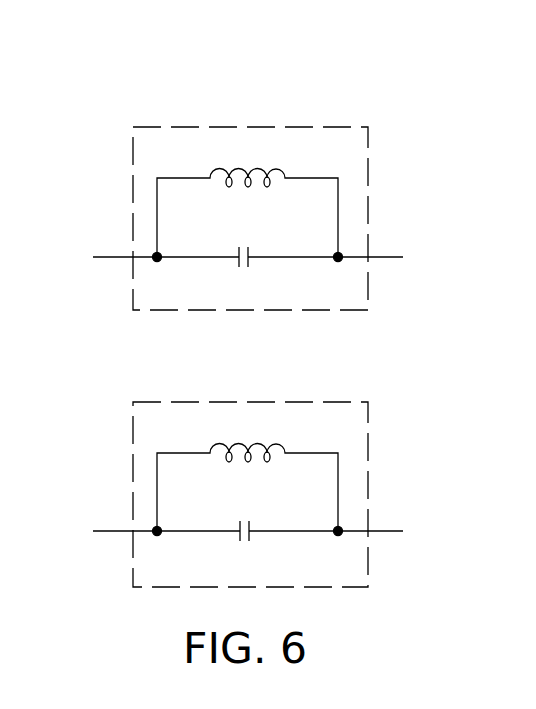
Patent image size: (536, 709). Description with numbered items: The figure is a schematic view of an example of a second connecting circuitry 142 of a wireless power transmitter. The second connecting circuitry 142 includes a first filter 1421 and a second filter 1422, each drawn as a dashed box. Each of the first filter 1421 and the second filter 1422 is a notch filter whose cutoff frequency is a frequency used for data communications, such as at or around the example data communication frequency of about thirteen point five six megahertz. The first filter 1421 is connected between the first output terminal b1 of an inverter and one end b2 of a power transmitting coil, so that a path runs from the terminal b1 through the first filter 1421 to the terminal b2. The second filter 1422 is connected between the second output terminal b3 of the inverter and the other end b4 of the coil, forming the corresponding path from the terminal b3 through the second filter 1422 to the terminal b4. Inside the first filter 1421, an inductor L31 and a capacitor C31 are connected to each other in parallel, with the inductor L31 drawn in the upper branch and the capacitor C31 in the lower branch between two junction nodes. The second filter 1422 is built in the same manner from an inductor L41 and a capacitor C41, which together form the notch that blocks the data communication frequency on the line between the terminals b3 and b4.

The second connecting circuitry 142 is at (272, 40).
The first filter 1421 is at (339, 127).
The second filter 1422 is at (339, 402).
The inductor L31 is at (247, 195).
The capacitor C31 is at (247, 274).
The inductor L41 is at (247, 469).
The capacitor C41 is at (247, 549).
The first output terminal b1 is at (107, 256).
The one end of power transmitting coil b2 is at (389, 256).
The second output terminal b3 is at (107, 530).
The other end of power transmitting coil b4 is at (389, 530).